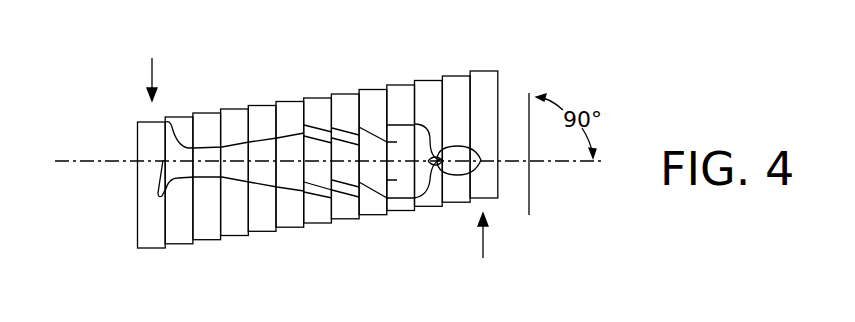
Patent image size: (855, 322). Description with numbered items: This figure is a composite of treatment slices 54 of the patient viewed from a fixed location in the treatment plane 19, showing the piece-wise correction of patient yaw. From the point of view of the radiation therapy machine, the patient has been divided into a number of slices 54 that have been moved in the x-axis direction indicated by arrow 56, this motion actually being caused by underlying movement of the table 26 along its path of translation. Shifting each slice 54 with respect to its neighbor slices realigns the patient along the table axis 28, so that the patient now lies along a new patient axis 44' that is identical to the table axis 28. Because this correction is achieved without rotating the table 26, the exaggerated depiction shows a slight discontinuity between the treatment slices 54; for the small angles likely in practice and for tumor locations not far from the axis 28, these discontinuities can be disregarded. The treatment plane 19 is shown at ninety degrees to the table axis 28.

The treatment plane 19 is at (529, 202).
The table 26 is at (483, 80).
The table axis 28 is at (81, 163).
The new patient axis 44' is at (275, 141).
The treatment slices 54 is at (430, 85).
The arrow 56 is at (482, 243).